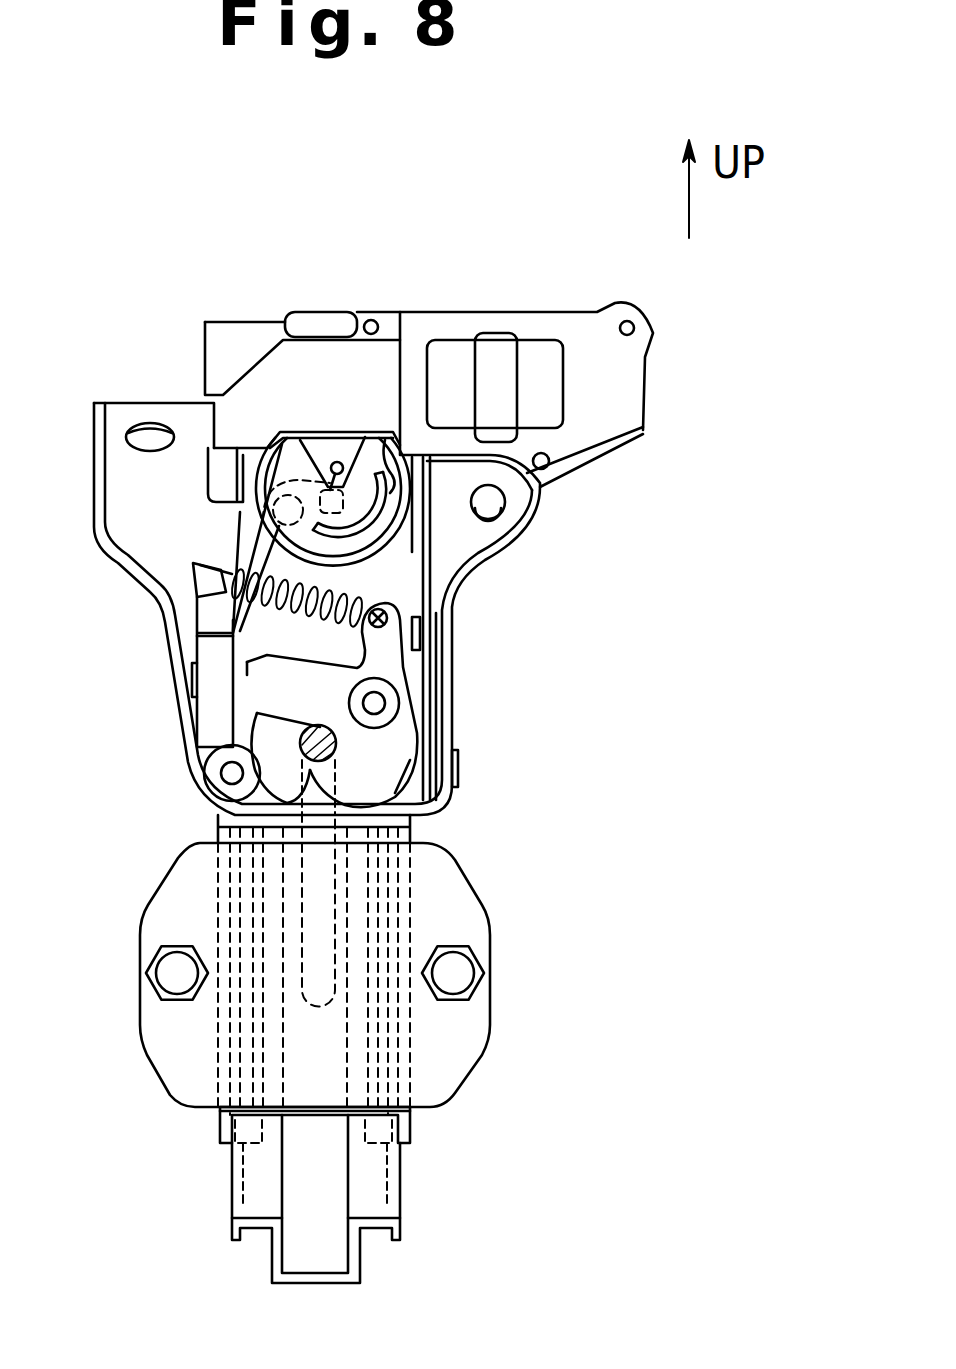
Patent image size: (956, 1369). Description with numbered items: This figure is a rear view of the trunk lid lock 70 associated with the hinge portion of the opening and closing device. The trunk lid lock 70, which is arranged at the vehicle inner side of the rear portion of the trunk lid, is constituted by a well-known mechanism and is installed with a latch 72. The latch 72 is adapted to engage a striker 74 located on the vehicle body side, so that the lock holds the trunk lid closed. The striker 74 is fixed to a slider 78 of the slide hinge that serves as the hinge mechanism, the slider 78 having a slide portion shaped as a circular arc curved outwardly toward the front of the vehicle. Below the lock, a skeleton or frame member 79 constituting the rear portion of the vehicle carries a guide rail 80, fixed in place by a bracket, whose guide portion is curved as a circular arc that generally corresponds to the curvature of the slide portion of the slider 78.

The trunk lid lock 70 is at (468, 640).
The latch 72 is at (359, 767).
The striker 74 is at (299, 737).
The slider 78 is at (362, 1260).
The frame member 79 is at (459, 932).
The guide rail 80 is at (417, 1132).